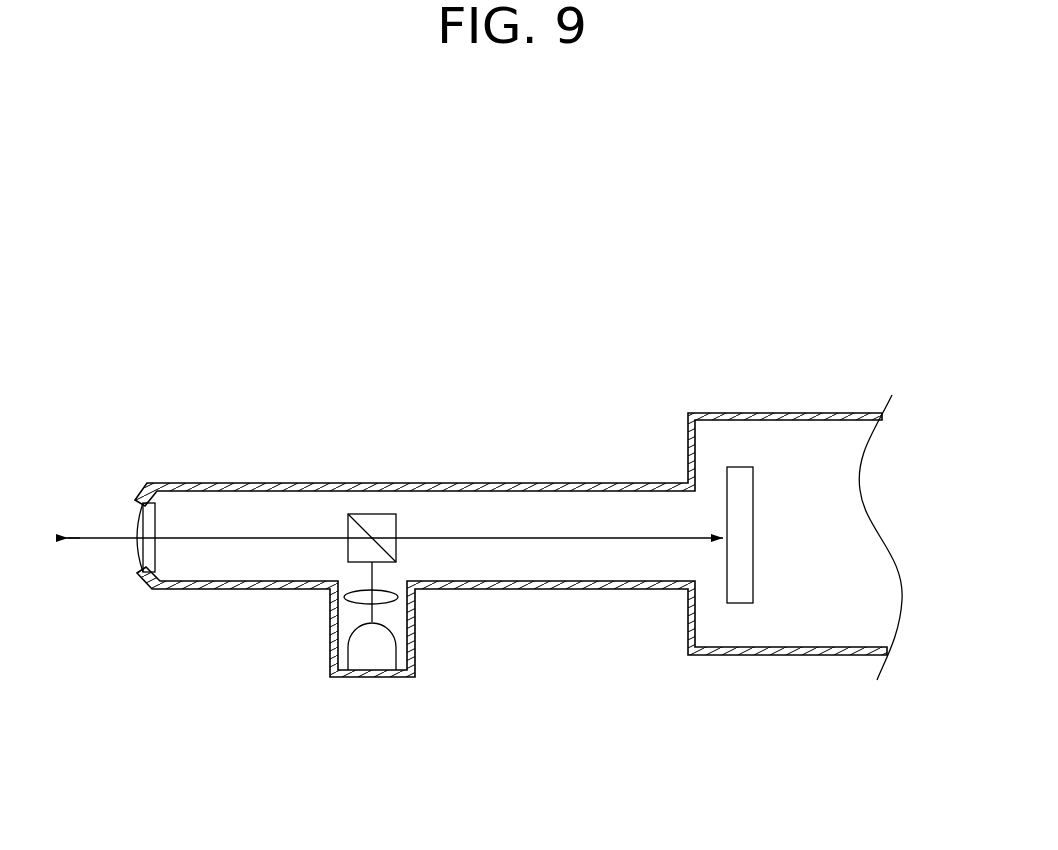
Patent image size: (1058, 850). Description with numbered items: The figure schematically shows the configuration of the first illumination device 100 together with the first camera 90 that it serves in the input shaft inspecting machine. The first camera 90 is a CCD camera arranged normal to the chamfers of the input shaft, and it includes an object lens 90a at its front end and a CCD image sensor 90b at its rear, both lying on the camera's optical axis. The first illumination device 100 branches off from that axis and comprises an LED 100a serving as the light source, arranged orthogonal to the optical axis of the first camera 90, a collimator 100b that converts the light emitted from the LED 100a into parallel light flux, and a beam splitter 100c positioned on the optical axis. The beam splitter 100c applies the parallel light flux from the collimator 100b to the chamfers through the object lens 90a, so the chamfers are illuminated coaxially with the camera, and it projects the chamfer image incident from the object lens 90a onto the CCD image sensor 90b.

The first camera 90 is at (798, 413).
The object lens 90a is at (137, 515).
The CCD image sensor 90b is at (740, 467).
The first illumination device 100 is at (363, 678).
The LED 100a is at (388, 656).
The collimator 100b is at (402, 597).
The beam splitter 100c is at (375, 513).